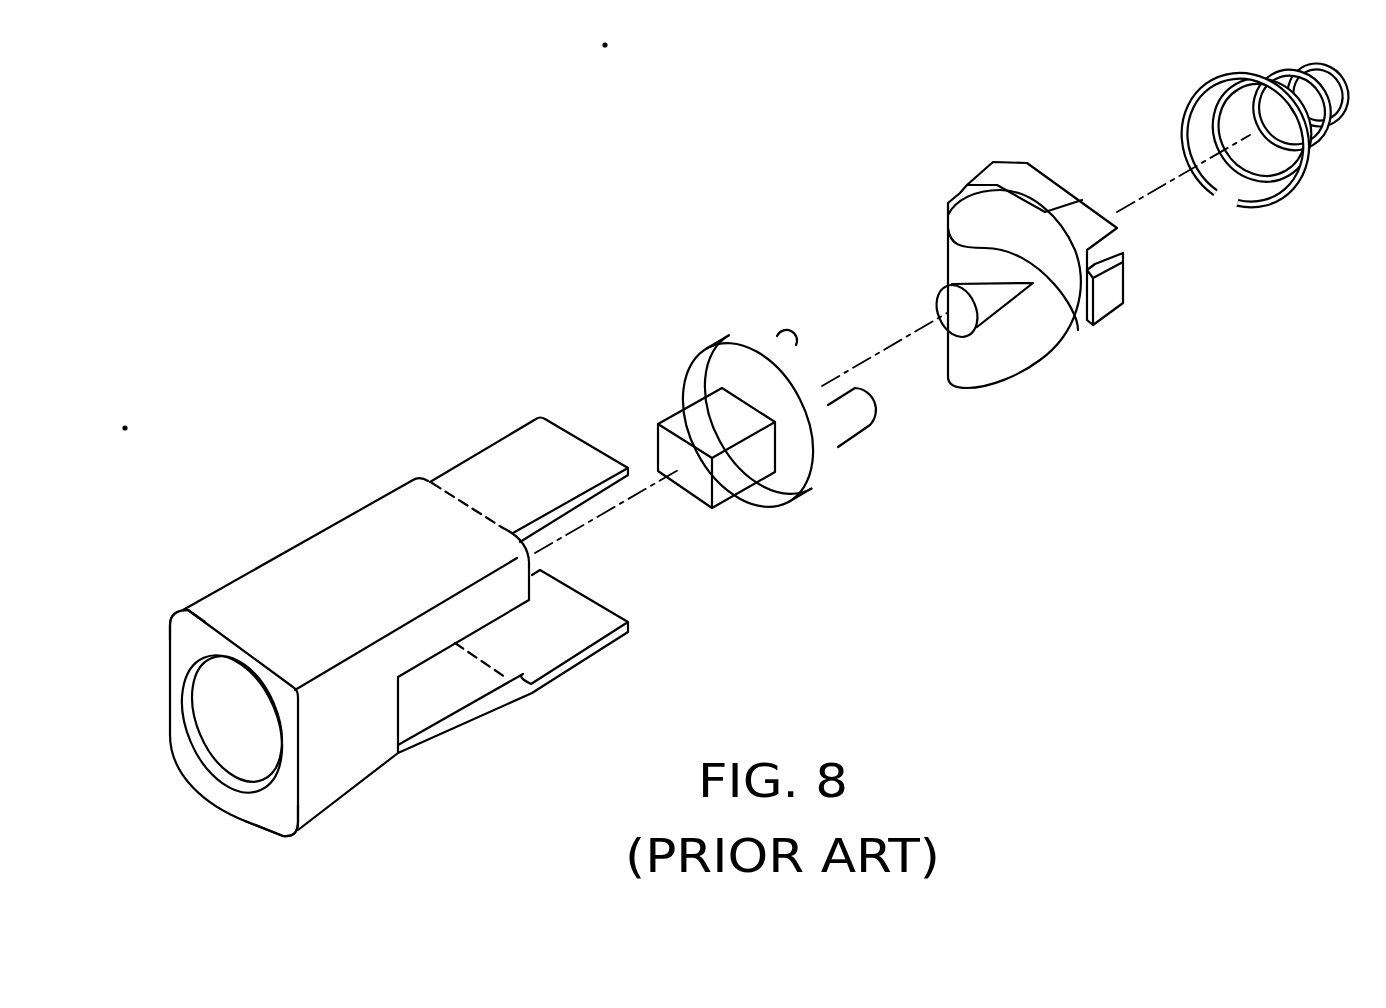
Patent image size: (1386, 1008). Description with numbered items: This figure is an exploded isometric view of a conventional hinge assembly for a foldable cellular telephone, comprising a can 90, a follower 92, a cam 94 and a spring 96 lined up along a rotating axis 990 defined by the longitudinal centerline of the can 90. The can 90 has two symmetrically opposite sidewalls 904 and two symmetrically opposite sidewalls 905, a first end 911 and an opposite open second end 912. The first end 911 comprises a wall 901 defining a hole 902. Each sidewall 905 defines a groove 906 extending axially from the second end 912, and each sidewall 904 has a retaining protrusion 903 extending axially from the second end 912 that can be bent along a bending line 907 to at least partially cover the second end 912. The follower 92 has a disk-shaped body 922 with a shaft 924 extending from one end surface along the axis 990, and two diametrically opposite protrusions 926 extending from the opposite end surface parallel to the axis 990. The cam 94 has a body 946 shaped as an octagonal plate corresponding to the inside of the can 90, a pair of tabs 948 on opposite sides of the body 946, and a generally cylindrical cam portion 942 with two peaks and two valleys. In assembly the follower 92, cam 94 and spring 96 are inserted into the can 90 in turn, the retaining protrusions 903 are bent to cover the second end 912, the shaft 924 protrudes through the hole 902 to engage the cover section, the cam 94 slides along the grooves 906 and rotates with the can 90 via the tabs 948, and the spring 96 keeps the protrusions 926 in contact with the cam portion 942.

The can 90 is at (246, 560).
The wall 901 is at (283, 802).
The hole 902 is at (225, 700).
The retaining protrusion 903 is at (567, 448).
The sidewall 904 is at (365, 547).
The sidewall 905 is at (352, 743).
The groove 906 is at (413, 700).
The bending line 907 is at (474, 505).
The first end 911 is at (187, 632).
The second end 912 is at (535, 563).
The follower 92 is at (727, 318).
The disk-shaped body 922 is at (820, 473).
The shaft 924 is at (740, 473).
The protrusion 926 is at (853, 417).
The cam 94 is at (1000, 143).
The cam portion 942 is at (985, 375).
The body 946 is at (1052, 192).
The tab 948 is at (1110, 290).
The spring 96 is at (1245, 77).
The rotating axis 990 is at (890, 347).